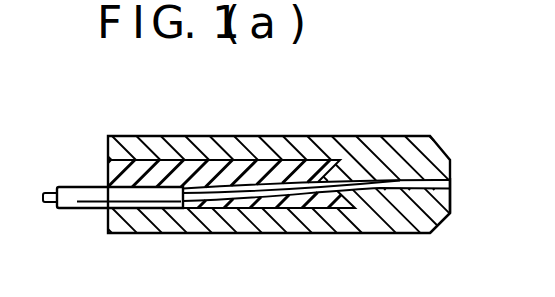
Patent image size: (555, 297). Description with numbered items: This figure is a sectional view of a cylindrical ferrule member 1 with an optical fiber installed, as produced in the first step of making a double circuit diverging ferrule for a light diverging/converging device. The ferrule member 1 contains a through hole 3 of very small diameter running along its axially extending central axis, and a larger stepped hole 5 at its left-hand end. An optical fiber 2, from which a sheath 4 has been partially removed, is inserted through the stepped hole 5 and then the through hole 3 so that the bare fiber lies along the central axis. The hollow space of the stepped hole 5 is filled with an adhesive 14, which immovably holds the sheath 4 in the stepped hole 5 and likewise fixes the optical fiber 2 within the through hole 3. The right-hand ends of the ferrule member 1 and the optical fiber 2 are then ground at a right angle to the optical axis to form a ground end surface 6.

The cylindrical ferrule member 1 is at (352, 142).
The optical fiber 2 is at (433, 180).
The through hole 3 is at (381, 187).
The sheath 4 is at (137, 195).
The stepped hole 5 is at (215, 160).
The ground end surface 6 is at (451, 190).
The adhesive 14 is at (140, 168).